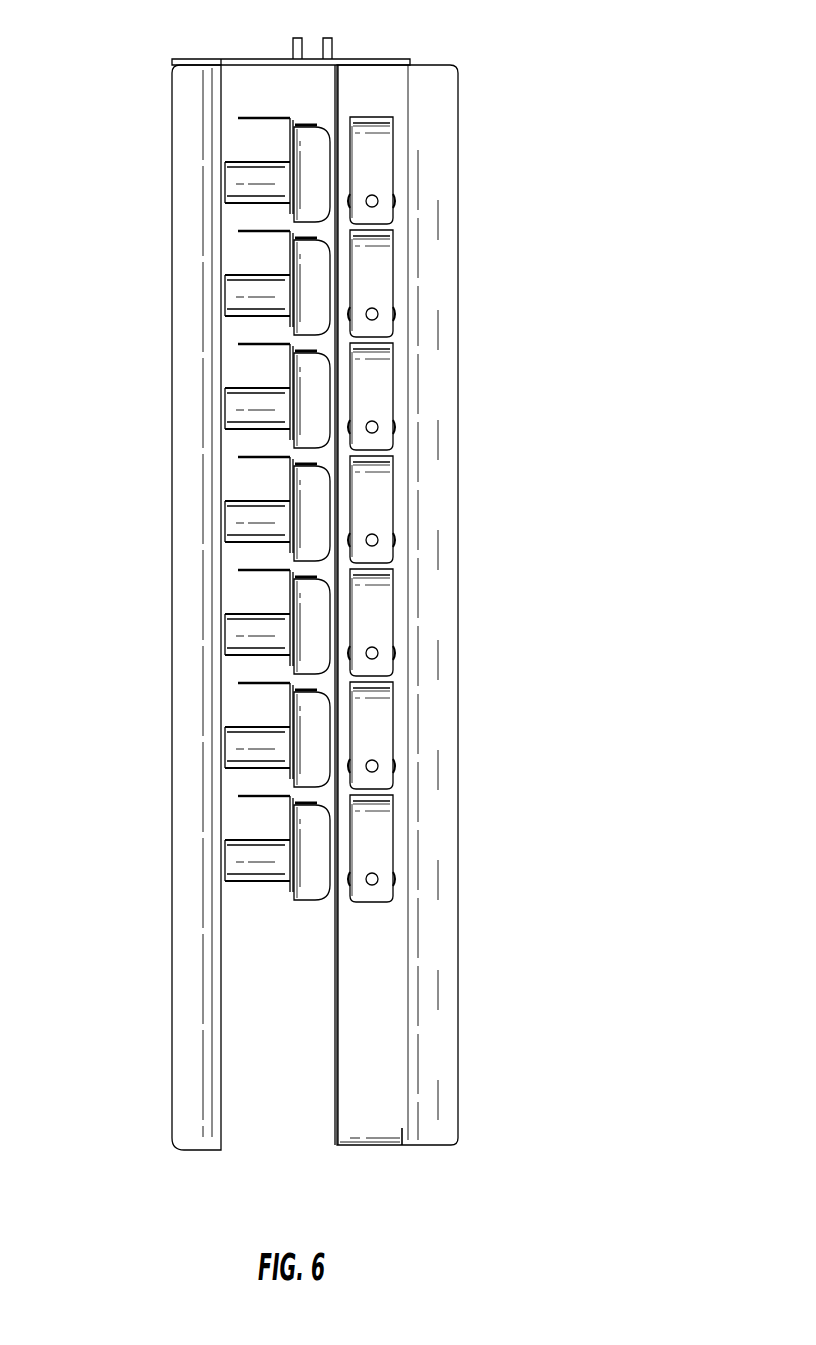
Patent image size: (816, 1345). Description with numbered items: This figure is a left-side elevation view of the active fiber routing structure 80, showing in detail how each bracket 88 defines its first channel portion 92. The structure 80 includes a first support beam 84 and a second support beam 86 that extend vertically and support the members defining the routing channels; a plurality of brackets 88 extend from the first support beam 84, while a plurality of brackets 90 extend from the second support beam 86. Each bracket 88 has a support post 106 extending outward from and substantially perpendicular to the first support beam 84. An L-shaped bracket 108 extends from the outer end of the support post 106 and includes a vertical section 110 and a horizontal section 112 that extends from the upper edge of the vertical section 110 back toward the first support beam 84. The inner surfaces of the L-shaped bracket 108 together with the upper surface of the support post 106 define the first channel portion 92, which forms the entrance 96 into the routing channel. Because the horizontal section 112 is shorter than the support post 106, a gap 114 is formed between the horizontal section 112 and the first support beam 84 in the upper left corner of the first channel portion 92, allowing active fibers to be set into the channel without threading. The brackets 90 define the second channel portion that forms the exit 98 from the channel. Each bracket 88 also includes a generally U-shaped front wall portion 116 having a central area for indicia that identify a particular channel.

The structure 80 is at (477, 53).
The first support beam 84 is at (180, 86).
The second support beam 86 is at (448, 105).
The bracket 88 is at (236, 896).
The bracket 90 is at (403, 847).
The first channel portion 92 is at (259, 815).
The entrance 96 is at (241, 823).
The exit 98 is at (398, 812).
The support post 106 is at (270, 872).
The L-shaped bracket 108 is at (297, 801).
The vertical section 110 is at (293, 872).
The horizontal section 112 is at (247, 796).
The gap 114 is at (229, 794).
The front wall portion 116 is at (320, 857).